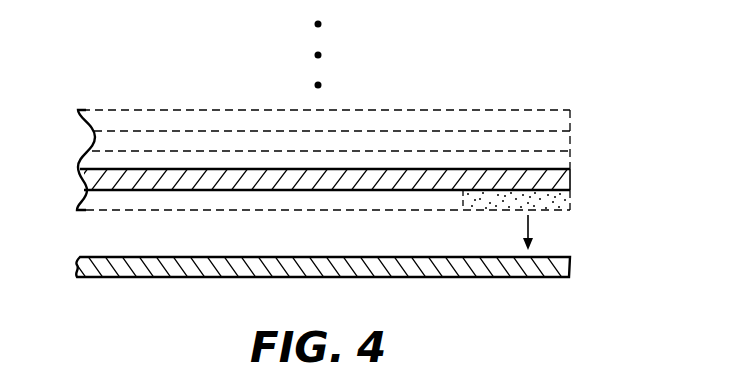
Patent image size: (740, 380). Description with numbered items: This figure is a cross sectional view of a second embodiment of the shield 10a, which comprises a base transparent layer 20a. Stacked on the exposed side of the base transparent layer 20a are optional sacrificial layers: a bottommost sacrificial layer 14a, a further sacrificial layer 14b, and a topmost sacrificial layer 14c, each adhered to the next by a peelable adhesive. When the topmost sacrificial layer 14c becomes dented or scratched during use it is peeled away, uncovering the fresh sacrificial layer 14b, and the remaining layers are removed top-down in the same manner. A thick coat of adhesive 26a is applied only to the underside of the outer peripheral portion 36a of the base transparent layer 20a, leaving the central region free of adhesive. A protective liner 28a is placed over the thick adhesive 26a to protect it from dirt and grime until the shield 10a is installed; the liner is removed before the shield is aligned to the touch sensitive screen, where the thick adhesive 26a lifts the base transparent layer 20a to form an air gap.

The shield 10a is at (582, 168).
The bottommost sacrificial layer 14a is at (110, 162).
The sacrificial layer 14b is at (162, 140).
The topmost sacrificial layer 14c is at (222, 122).
The base transparent layer 20a is at (290, 177).
The adhesive 26a is at (477, 200).
The protective liner 28a is at (162, 267).
The outer peripheral portion 36a is at (570, 92).